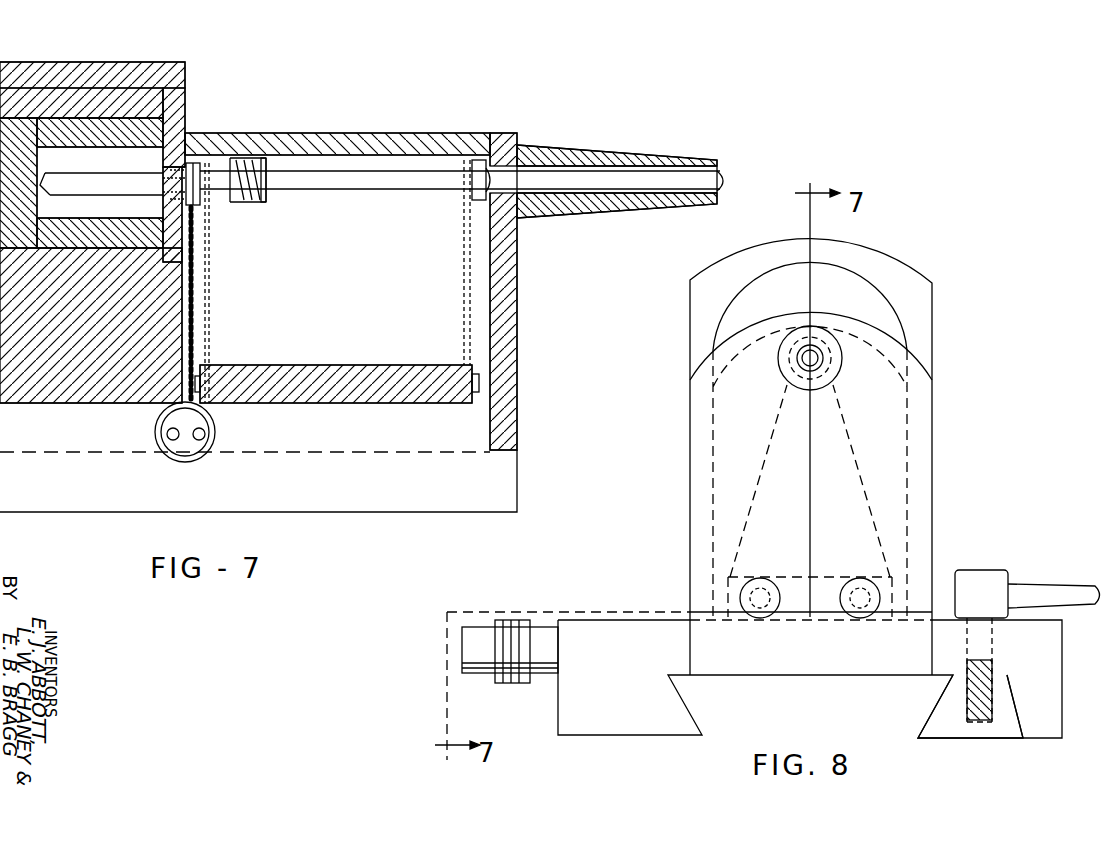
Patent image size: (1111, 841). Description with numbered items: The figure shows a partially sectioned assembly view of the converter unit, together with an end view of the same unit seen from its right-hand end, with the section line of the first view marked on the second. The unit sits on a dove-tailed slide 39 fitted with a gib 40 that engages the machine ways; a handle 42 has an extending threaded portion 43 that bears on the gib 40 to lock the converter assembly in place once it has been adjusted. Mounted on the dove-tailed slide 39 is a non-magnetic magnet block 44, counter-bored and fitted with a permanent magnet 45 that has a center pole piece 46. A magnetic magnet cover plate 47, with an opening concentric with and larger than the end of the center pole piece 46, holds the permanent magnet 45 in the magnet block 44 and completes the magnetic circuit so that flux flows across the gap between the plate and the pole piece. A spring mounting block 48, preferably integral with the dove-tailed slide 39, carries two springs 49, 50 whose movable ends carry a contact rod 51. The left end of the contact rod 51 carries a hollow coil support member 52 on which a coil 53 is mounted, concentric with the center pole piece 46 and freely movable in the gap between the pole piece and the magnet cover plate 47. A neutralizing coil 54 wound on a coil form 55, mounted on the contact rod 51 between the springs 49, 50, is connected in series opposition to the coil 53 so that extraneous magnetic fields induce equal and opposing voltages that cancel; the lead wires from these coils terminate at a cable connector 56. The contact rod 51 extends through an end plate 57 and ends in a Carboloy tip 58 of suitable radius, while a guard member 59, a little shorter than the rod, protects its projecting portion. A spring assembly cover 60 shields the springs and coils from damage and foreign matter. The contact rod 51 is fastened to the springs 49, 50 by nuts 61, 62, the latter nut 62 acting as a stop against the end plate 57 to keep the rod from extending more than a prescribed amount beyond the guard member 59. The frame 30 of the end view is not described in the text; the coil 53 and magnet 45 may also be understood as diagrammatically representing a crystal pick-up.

In FIG. 8, the frame housing 30 is at (935, 338).
In FIG. 7, the dove-tailed slide 39 is at (500, 490).
In FIG. 8, the dove-tailed slide 39 is at (1033, 725).
In FIG. 8, the gib 40 is at (968, 725).
In FIG. 8, the handle 42 is at (968, 590).
In FIG. 8, the threaded portion 43 is at (983, 648).
In FIG. 7, the magnet block 44 is at (185, 68).
In FIG. 7, the permanent magnet 45 is at (176, 105).
In FIG. 7, the center pole piece 46 is at (100, 178).
In FIG. 7, the magnet cover plate 47 is at (178, 132).
In FIG. 7, the spring mounting block 48 is at (268, 372).
In FIG. 7, the spring 49 is at (212, 318).
In FIG. 7, the spring 50 is at (464, 322).
In FIG. 7, the contact rod 51 is at (347, 187).
In FIG. 7, the hollow coil support member 52 is at (203, 235).
In FIG. 7, the coil 53 is at (168, 176).
In FIG. 7, the neutralizing coil 54 is at (258, 205).
In FIG. 7, the coil form 55 is at (265, 200).
In FIG. 7, the cable connector 56 is at (198, 448).
In FIG. 8, the cable connector 56 is at (527, 685).
In FIG. 7, the end plate 57 is at (518, 312).
In FIG. 7, the Carboloy tip 58 is at (722, 165).
In FIG. 7, the guard member 59 is at (560, 145).
In FIG. 7, the spring assembly cover 60 is at (452, 135).
In FIG. 7, the nut 61 is at (205, 187).
In FIG. 7, the nut 62 is at (467, 247).